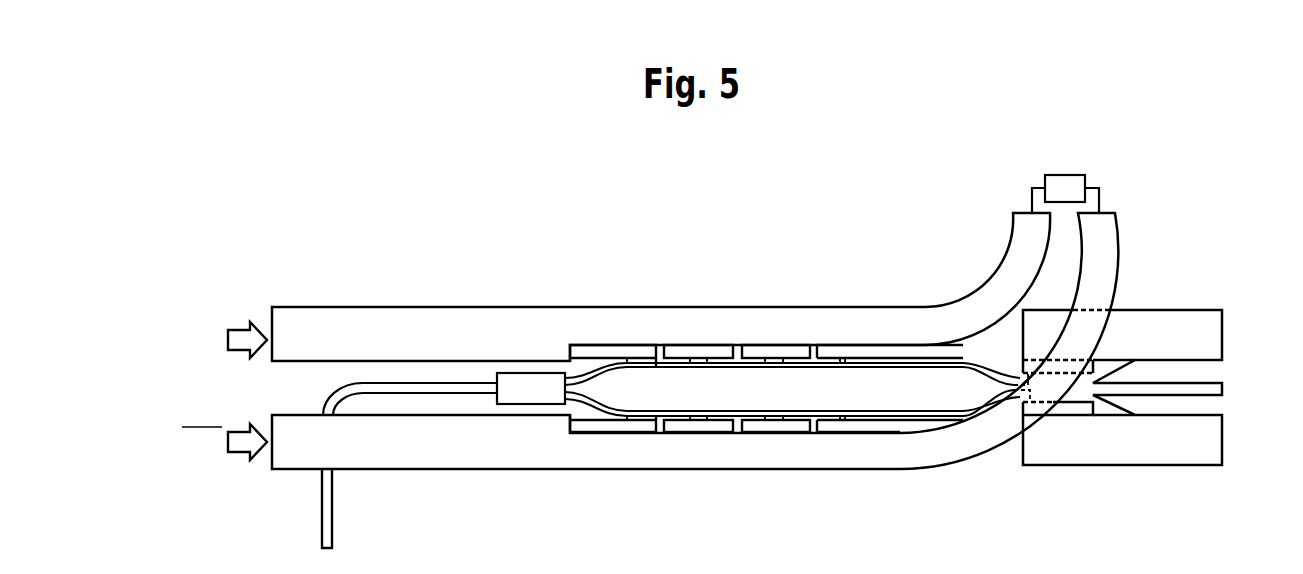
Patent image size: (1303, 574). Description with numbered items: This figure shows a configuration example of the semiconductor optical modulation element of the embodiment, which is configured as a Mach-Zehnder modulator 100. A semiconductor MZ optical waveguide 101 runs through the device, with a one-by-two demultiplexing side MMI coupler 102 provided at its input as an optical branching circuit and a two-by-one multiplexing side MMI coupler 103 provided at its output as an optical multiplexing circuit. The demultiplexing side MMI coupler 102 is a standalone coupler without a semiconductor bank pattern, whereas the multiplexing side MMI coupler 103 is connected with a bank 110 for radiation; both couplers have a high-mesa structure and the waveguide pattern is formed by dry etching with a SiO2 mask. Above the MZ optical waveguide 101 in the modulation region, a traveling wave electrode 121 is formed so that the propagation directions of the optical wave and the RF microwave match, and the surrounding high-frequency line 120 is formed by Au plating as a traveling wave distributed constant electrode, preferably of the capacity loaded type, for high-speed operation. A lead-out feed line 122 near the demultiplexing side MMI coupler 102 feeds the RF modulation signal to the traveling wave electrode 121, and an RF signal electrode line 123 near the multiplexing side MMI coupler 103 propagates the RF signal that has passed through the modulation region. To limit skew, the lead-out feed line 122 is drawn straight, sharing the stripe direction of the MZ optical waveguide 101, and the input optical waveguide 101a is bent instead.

The Mach-Zehnder modulator 100 is at (868, 273).
The MZ optical waveguide 101 is at (970, 360).
The input optical waveguide 101a is at (333, 507).
The demultiplexing side MMI coupler 102 is at (533, 404).
The multiplexing side MMI coupler 103 is at (1072, 415).
The bank 110 is at (1197, 310).
The high-frequency line 120 is at (690, 290).
The traveling wave electrode 121 is at (659, 364).
The lead-out feed line 122 is at (403, 307).
The RF signal electrode line 123 is at (1118, 225).